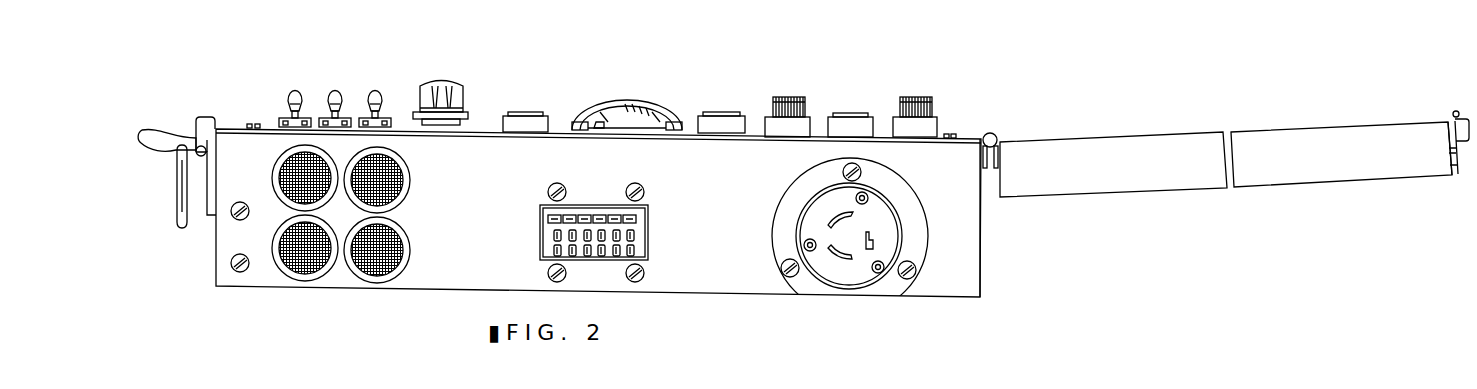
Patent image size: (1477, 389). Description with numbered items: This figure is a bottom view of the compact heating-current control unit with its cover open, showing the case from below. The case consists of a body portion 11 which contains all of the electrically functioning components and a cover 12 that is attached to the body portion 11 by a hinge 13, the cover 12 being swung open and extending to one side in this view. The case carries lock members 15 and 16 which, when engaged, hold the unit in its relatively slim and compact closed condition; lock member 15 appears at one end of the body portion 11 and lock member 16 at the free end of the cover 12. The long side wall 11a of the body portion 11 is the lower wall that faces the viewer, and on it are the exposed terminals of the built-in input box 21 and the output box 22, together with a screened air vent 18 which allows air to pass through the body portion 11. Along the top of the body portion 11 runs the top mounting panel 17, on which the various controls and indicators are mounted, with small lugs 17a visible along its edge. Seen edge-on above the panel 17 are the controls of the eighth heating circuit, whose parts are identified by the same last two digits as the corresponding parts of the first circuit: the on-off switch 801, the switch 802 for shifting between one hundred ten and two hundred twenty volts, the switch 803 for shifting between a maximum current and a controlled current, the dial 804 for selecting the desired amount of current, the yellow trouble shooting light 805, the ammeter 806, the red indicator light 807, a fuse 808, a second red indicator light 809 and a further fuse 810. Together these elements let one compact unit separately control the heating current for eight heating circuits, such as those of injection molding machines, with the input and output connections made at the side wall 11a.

The body portion 11 is at (226, 243).
The side wall 11a is at (962, 258).
The cover 12 is at (1210, 140).
The hinge 13 is at (998, 137).
The lock member 15 is at (174, 155).
The lock member 16 is at (1452, 115).
The top mounting panel 17 is at (240, 126).
The bracket lugs 17a is at (250, 123).
The screened air vent 18 is at (397, 232).
The input box 21 is at (833, 210).
The output box 22 is at (648, 225).
The on-off switch 801 is at (293, 91).
The voltage shifting switch 802 is at (335, 90).
The current mode switch 803 is at (380, 91).
The dial 804 is at (451, 82).
The yellow trouble shooting light 805 is at (513, 112).
The ammeter 806 is at (627, 102).
The red indicator light 807 is at (722, 112).
The fuse 808 is at (783, 97).
The second red indicator light 809 is at (843, 113).
The fuse 810 is at (917, 97).